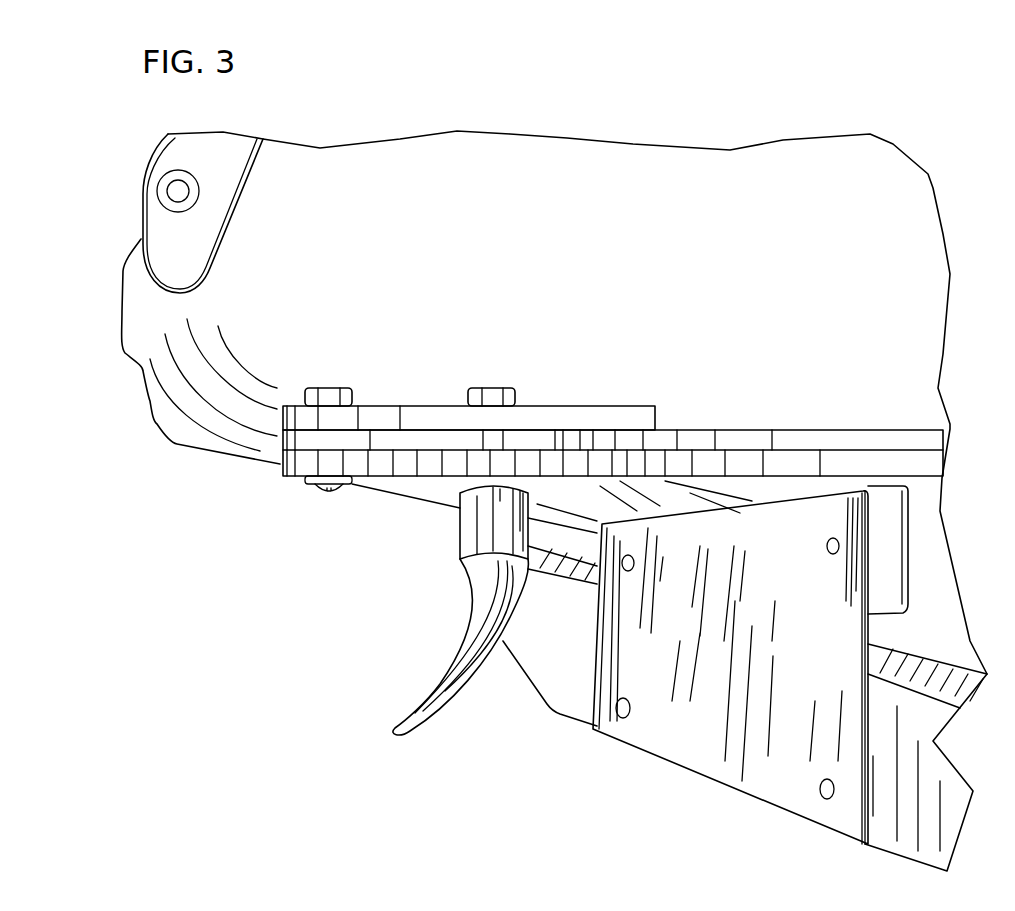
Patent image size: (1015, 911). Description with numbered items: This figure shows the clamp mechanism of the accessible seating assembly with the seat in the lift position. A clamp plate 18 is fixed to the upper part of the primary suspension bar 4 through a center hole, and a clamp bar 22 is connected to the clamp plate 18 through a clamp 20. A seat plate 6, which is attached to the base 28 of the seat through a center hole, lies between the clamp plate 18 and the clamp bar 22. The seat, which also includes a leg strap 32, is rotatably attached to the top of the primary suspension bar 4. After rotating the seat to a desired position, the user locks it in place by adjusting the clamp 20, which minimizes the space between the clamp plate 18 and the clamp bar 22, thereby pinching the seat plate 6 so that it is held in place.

The primary suspension bar 4 is at (883, 723).
The seat plate 6 is at (707, 438).
The clamp plate 18 is at (807, 468).
The clamp 20 is at (473, 542).
The clamp bar 22 is at (428, 413).
The base 28 is at (153, 413).
The leg strap 32 is at (165, 228).